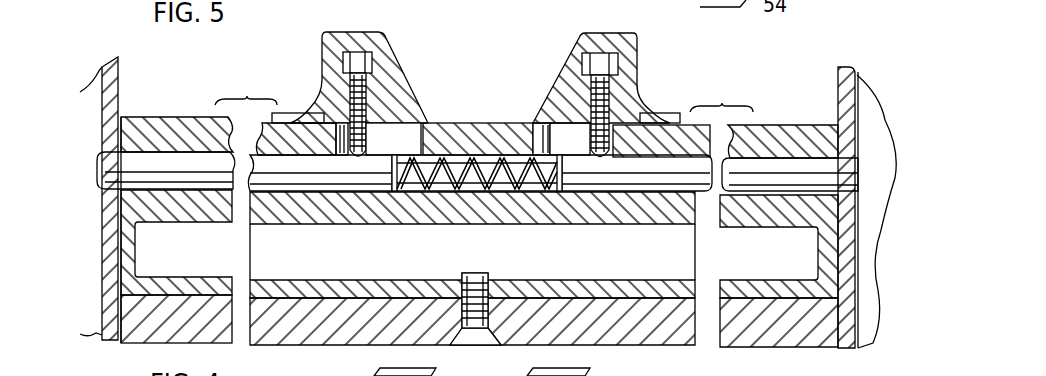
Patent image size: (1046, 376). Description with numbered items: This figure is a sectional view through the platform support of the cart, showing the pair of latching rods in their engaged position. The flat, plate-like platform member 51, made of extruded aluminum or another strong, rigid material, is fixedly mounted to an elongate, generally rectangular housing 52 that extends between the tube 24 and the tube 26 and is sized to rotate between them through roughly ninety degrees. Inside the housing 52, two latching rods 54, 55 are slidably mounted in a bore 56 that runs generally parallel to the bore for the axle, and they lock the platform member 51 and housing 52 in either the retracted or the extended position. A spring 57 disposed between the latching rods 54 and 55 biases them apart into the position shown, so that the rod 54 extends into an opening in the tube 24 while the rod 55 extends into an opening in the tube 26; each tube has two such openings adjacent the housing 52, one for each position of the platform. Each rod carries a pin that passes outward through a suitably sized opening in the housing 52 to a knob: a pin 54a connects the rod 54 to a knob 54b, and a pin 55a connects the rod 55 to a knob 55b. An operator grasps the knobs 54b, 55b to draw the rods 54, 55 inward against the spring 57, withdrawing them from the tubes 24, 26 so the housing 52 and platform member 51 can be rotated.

The tube 24 is at (114, 78).
The tube 26 is at (853, 92).
The platform member 51 is at (292, 333).
The housing 52 is at (358, 290).
The latching rod 54 is at (167, 162).
The pin 54a is at (368, 100).
The knob 54b is at (388, 70).
The latching rod 55 is at (658, 168).
The pin 55a is at (622, 102).
The knob 55b is at (630, 42).
The bore 56 is at (470, 163).
The spring 57 is at (457, 155).